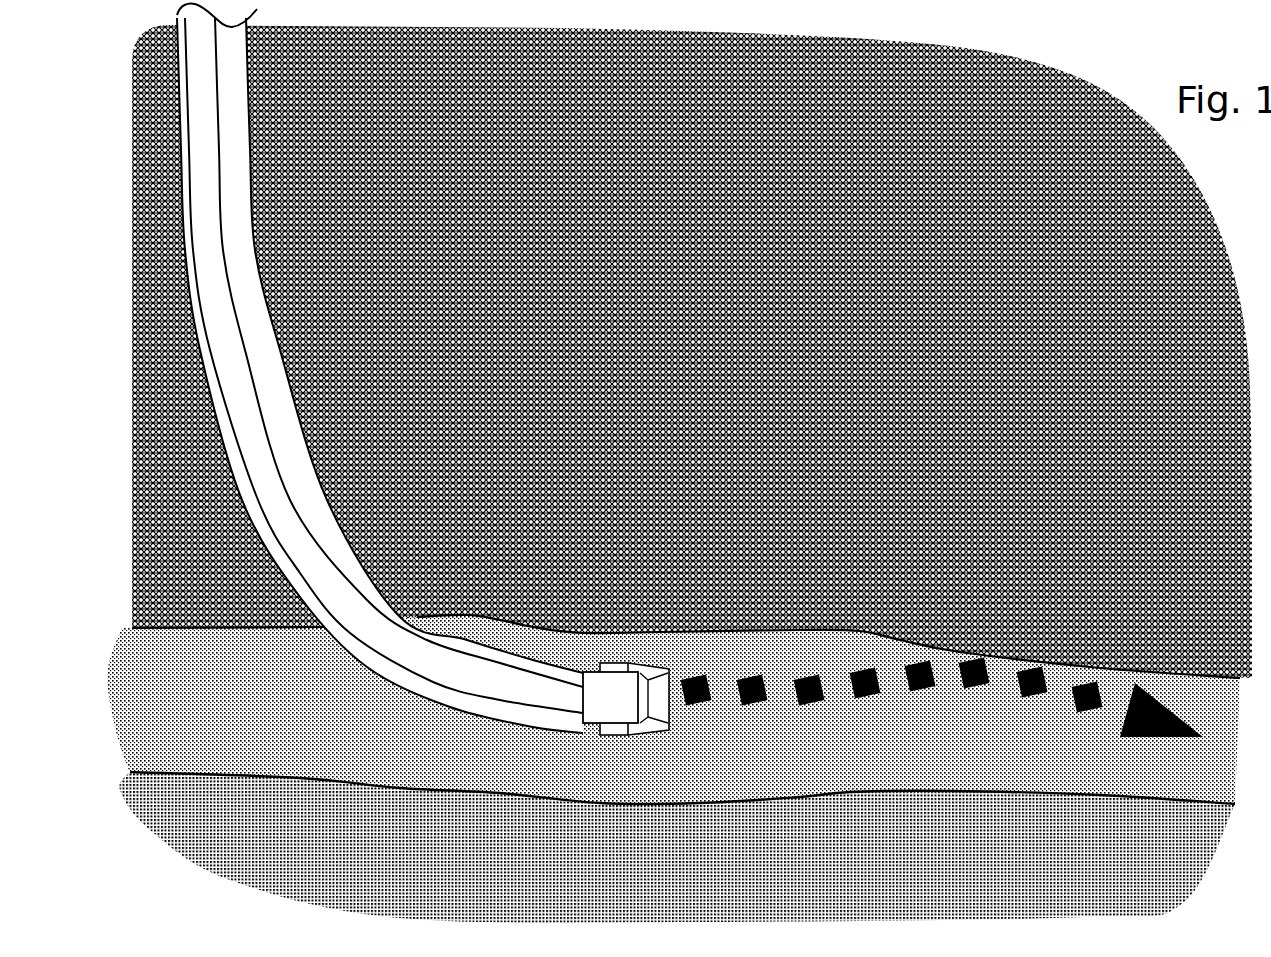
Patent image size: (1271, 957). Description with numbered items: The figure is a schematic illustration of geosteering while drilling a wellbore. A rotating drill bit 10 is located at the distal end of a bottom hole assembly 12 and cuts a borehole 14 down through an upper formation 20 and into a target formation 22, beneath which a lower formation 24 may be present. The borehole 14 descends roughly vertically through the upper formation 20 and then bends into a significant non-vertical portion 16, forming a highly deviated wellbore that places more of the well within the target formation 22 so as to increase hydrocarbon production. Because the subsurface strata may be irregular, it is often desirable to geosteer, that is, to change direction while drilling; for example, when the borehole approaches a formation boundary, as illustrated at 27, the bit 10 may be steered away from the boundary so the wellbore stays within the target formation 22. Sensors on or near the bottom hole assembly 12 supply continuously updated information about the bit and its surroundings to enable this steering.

The drill bit 10 is at (663, 715).
The bottom hole assembly 12 is at (593, 709).
The borehole 14 is at (258, 287).
The non-vertical portion 16 is at (563, 733).
The upper formation 20 is at (702, 403).
The target formation 22 is at (277, 701).
The lower formation 24 is at (874, 875).
The formation boundary 27 is at (977, 658).